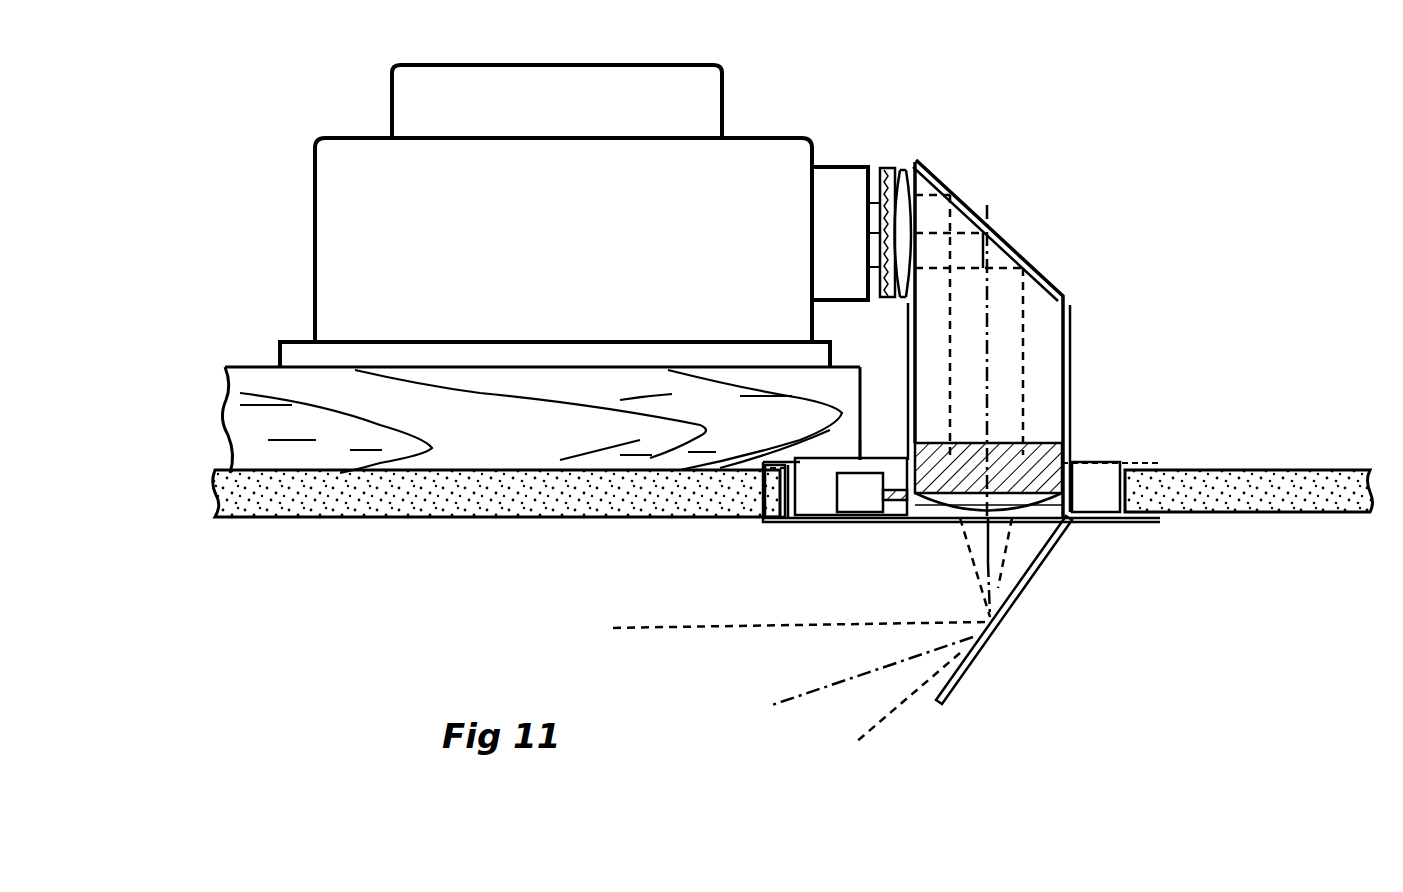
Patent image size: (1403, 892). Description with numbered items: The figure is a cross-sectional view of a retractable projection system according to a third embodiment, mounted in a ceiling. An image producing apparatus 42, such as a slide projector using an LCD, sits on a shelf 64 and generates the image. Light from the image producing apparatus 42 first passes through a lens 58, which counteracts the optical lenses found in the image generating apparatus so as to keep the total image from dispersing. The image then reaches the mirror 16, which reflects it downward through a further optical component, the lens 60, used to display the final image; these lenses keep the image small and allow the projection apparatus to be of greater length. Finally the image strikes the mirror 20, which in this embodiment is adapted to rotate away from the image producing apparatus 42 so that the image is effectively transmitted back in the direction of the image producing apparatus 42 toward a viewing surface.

The image producing apparatus 42 is at (747, 158).
The lens 58 is at (923, 178).
The mirror 16 is at (1007, 247).
The lens 60 is at (1070, 453).
The shelf 64 is at (355, 498).
The mirror 20 is at (1017, 603).